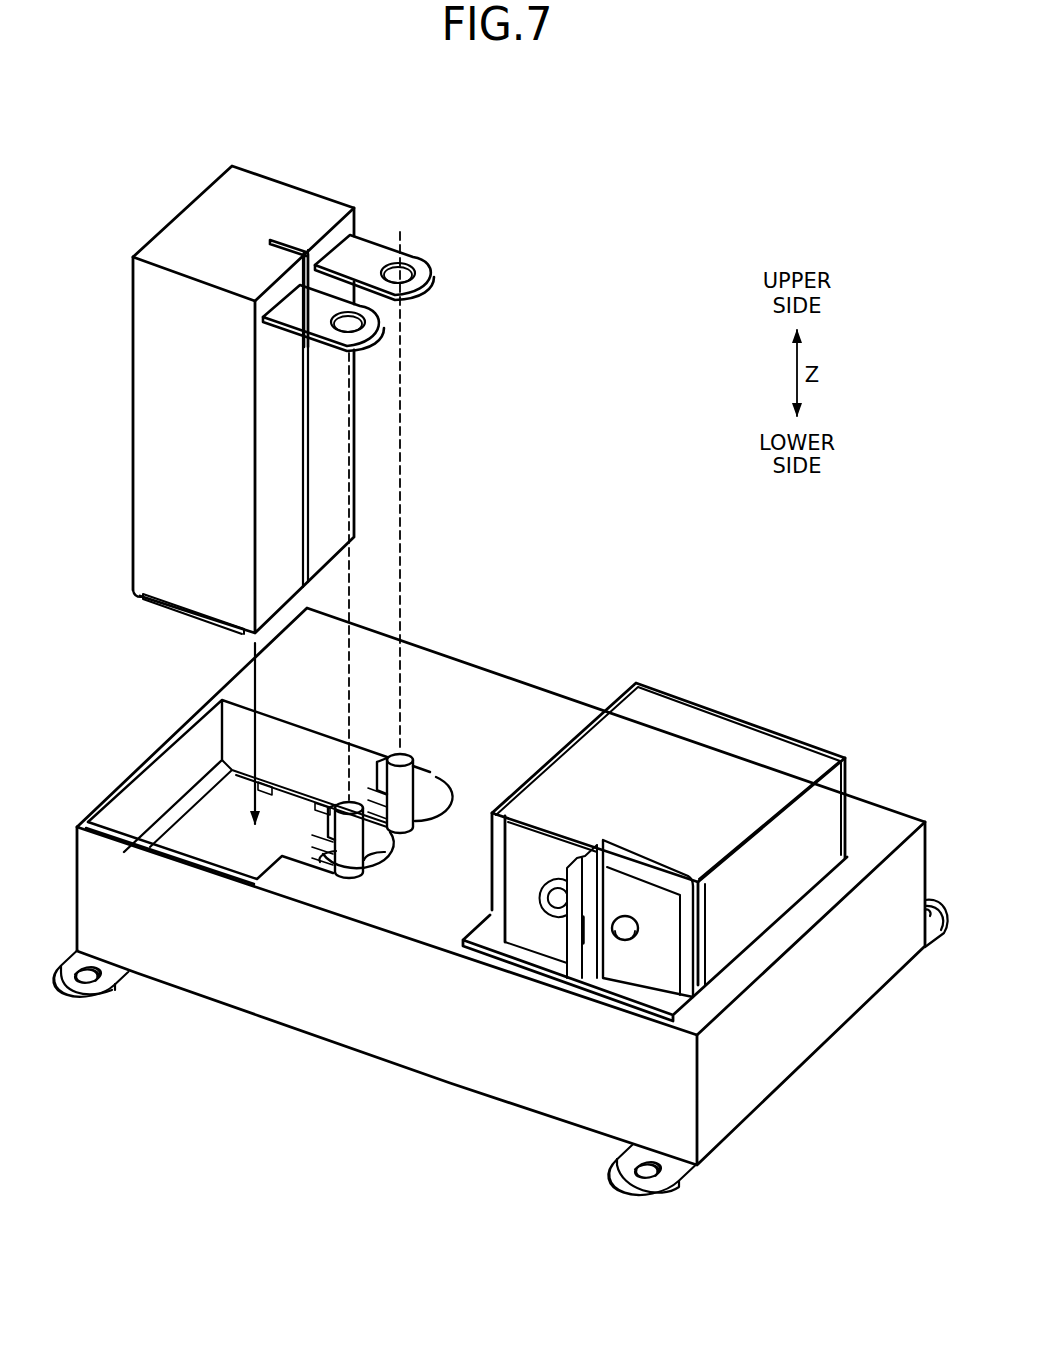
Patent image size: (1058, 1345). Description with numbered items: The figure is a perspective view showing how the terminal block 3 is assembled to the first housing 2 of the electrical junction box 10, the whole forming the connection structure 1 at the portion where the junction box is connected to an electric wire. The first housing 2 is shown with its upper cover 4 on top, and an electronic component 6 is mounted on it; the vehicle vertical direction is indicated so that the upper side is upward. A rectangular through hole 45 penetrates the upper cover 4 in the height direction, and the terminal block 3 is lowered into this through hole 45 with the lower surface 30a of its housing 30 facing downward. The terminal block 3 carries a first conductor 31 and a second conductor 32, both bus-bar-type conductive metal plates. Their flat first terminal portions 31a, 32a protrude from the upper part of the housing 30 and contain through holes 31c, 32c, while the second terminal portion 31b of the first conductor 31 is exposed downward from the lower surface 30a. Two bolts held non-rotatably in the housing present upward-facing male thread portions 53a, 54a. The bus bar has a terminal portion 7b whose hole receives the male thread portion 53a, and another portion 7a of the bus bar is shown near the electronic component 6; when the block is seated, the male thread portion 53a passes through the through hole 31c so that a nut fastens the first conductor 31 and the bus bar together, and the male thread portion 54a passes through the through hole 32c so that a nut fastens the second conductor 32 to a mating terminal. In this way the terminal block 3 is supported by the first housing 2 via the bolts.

The connection structure 1 is at (519, 130).
The first housing 2 is at (520, 670).
The terminal block 3 is at (238, 190).
The upper cover 4 is at (540, 715).
The electronic component 6 is at (723, 750).
The first end of bus bar 7a is at (633, 968).
The terminal portion 7b is at (392, 858).
The electrical junction box 10 is at (592, 565).
The housing 30 is at (155, 491).
The lower surface 30a is at (137, 597).
The first conductor 31 is at (315, 310).
The first terminal portion 31a is at (294, 297).
The second terminal portion 31b is at (196, 617).
The through hole 31c is at (367, 337).
The second conductor 32 is at (347, 252).
The first terminal portion 32a is at (366, 262).
The through hole 32c is at (413, 265).
The through hole 45 is at (167, 835).
The male thread portion 53a is at (332, 878).
The male thread portion 54a is at (407, 790).